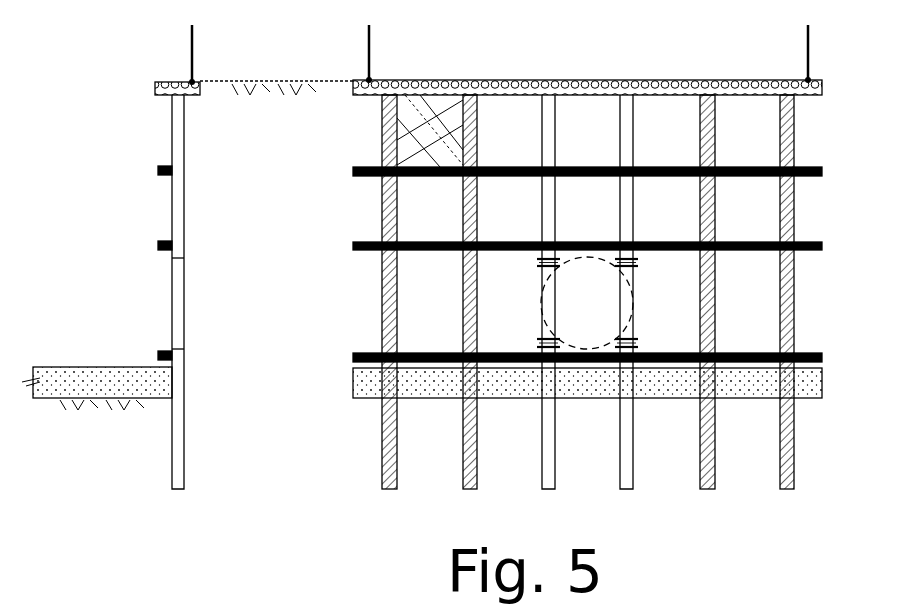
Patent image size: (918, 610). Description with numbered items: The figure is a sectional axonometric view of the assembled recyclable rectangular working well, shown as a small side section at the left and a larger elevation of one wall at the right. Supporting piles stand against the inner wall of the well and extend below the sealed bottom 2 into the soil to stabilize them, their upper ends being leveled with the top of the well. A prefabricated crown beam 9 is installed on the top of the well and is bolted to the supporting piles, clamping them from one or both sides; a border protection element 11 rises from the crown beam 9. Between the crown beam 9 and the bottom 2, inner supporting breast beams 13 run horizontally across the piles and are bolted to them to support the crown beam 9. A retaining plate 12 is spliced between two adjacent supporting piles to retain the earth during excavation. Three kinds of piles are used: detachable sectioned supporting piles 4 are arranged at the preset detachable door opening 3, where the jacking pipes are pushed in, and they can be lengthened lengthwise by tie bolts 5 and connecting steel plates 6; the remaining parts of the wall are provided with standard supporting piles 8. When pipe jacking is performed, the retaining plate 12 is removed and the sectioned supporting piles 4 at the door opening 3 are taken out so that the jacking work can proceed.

The bottom 2 is at (78, 383).
The preset detachable door opening 3 is at (172, 258).
The detachable sectioned supporting pile 4 is at (185, 450).
The tie bolt 5 is at (542, 264).
The connecting steel plate 6 is at (632, 340).
The standard supporting pile 8 is at (393, 490).
The prefabricated crown beam 9 is at (168, 82).
The guard post 11 is at (228, 44).
The retaining plate 12 is at (185, 118).
The inner supporting breast beam 13 is at (165, 176).